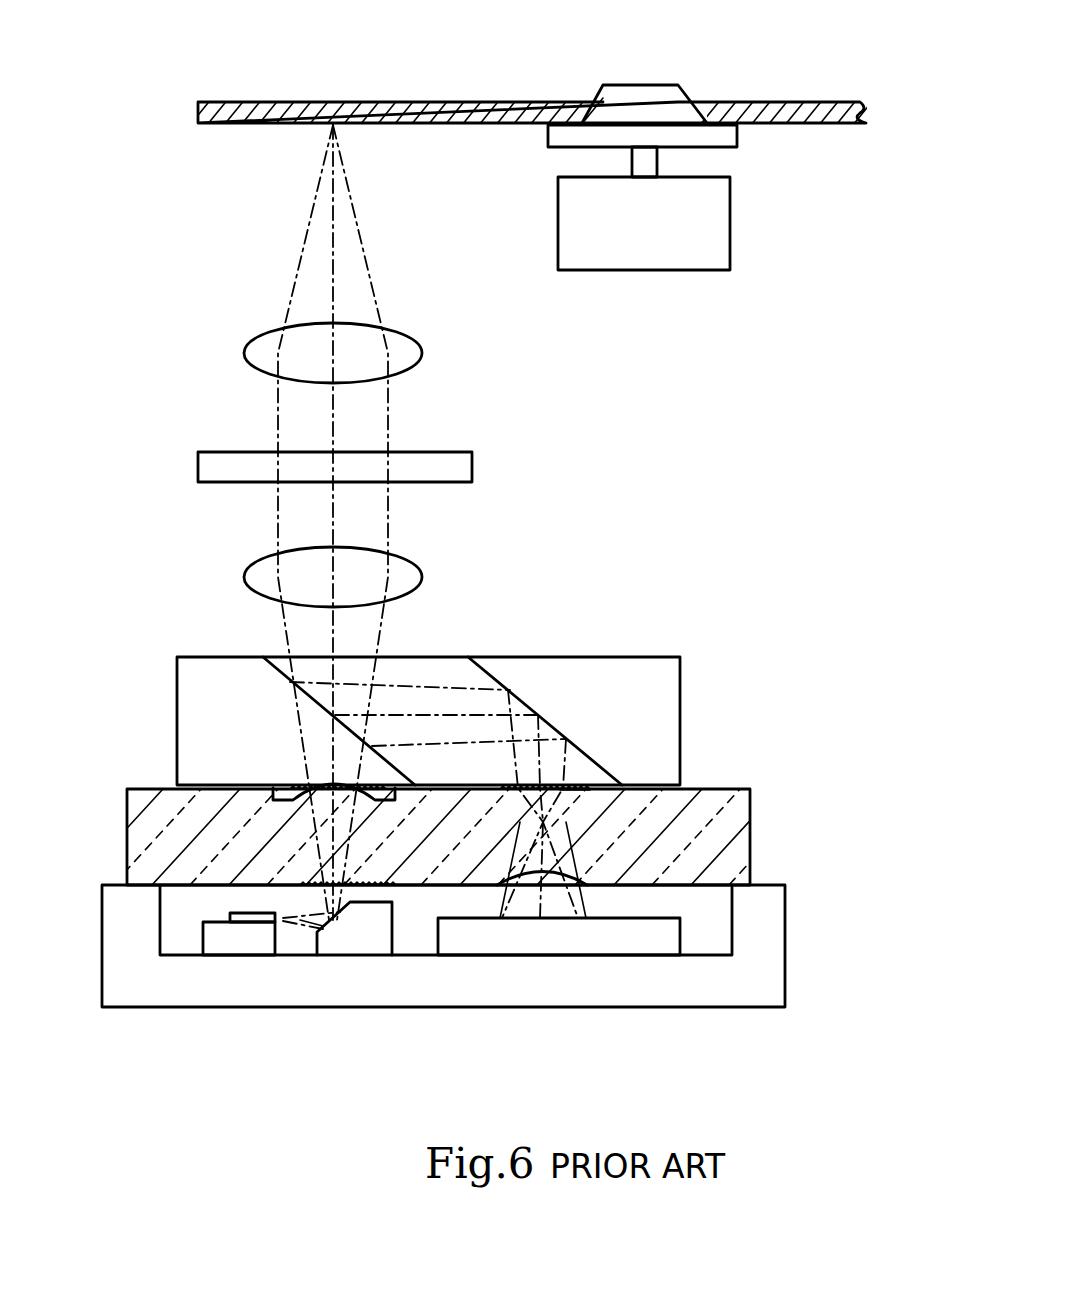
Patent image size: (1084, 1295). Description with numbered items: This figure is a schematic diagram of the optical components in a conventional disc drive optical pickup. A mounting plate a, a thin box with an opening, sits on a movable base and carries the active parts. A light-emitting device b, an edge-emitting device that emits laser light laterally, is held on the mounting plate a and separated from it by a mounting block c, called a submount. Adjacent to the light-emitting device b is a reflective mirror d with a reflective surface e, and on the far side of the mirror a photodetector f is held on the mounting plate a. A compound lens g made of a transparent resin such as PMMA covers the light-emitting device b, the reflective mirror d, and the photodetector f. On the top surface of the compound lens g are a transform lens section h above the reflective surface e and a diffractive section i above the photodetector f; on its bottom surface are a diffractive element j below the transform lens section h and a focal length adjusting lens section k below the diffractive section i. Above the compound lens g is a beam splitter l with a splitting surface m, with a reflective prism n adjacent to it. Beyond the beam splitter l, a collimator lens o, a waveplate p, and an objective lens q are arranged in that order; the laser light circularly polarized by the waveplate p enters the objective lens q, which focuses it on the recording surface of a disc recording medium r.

The mounting plate a is at (418, 993).
The light-emitting device b is at (284, 921).
The mounting block c is at (232, 943).
The reflective mirror d is at (352, 943).
The reflective surface e is at (323, 928).
The photodetector f is at (645, 943).
The compound lens g is at (750, 808).
The transform lens section h is at (289, 790).
The diffractive section i is at (573, 790).
The diffractive element j is at (311, 883).
The focal length adjusting lens section k is at (545, 890).
The beam splitter l is at (192, 692).
The splitting surface m is at (308, 698).
The reflective prism n is at (608, 668).
The collimator lens o is at (417, 565).
The waveplate p is at (472, 462).
The objective lens q is at (417, 338).
The disc recording medium r is at (412, 100).